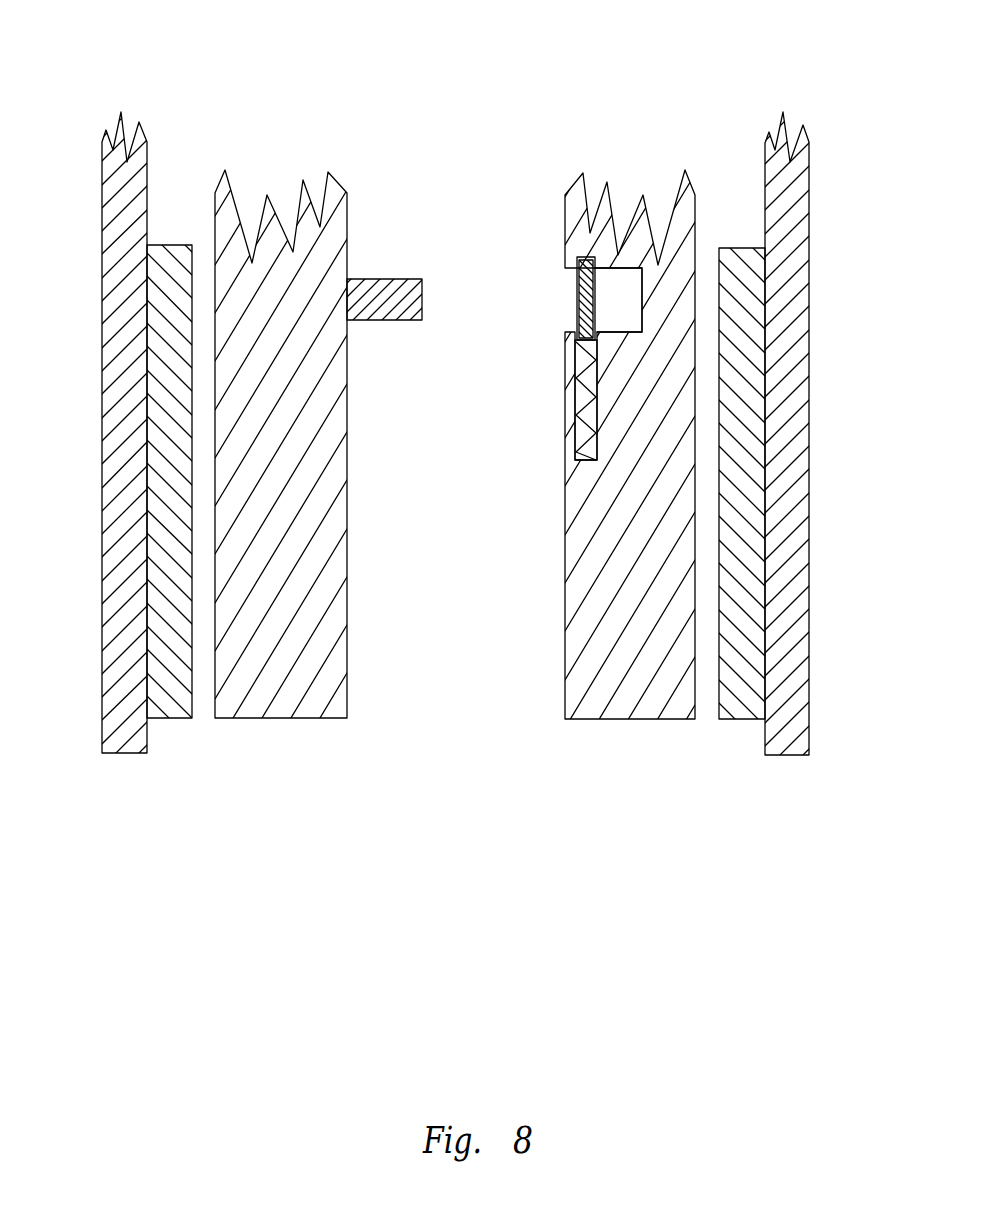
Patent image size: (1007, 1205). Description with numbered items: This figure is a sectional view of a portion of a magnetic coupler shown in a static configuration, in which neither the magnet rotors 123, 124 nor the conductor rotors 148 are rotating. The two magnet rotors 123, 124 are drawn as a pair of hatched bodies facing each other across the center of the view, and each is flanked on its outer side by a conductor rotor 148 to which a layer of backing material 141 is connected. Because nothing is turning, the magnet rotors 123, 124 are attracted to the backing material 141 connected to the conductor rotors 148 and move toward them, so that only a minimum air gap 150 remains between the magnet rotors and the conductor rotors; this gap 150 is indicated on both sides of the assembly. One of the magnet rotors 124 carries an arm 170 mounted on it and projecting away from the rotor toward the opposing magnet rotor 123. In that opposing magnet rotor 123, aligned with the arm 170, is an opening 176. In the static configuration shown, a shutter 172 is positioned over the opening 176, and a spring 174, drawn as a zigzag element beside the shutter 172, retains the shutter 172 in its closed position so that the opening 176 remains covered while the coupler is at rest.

The magnet rotor 123 is at (628, 720).
The magnet rotor 124 is at (285, 718).
The backing material 141 is at (102, 597).
The conductor rotor 148 is at (147, 391).
The air gap 150 is at (203, 190).
The arm 170 is at (386, 279).
The shutter 172 is at (577, 299).
The spring 174 is at (575, 400).
The opening 176 is at (622, 286).